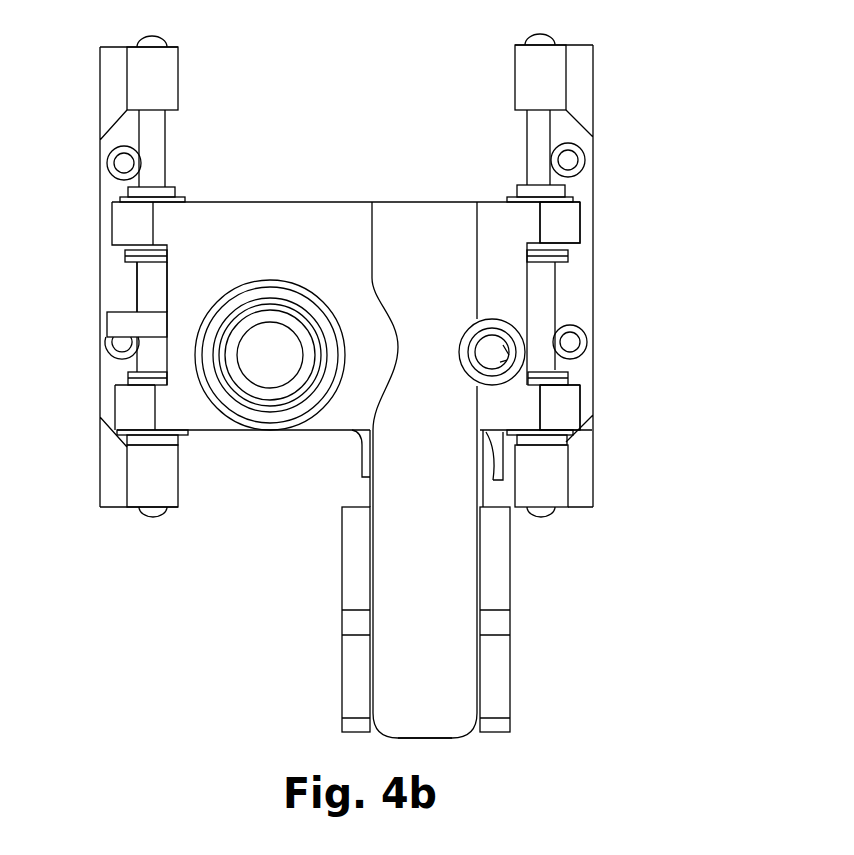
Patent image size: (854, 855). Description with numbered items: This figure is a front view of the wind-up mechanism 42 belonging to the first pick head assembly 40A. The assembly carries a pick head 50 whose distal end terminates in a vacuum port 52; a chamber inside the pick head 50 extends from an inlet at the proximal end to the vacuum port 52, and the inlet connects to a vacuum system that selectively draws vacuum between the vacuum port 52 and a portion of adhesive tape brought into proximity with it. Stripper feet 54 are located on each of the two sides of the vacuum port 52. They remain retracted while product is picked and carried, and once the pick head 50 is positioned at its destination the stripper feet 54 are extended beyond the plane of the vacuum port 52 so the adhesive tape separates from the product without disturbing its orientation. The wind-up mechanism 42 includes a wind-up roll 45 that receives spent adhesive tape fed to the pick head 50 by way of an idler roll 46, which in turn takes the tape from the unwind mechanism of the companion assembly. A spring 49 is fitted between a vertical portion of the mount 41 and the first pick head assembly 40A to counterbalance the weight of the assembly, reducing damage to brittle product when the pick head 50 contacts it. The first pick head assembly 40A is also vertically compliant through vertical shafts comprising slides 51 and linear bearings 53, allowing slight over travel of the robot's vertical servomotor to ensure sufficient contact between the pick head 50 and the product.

The first pick head assembly 40A is at (628, 209).
The mount 41 is at (112, 50).
The wind-up mechanism 42 is at (217, 567).
The wind-up roll 45 is at (272, 432).
The idler roll 46 is at (495, 318).
The spring 49 is at (135, 292).
The pick head 50 is at (448, 677).
The slides 51 is at (153, 150).
The vacuum port 52 is at (449, 746).
The linear bearings 53 is at (560, 258).
The stripper feet 54 is at (513, 680).